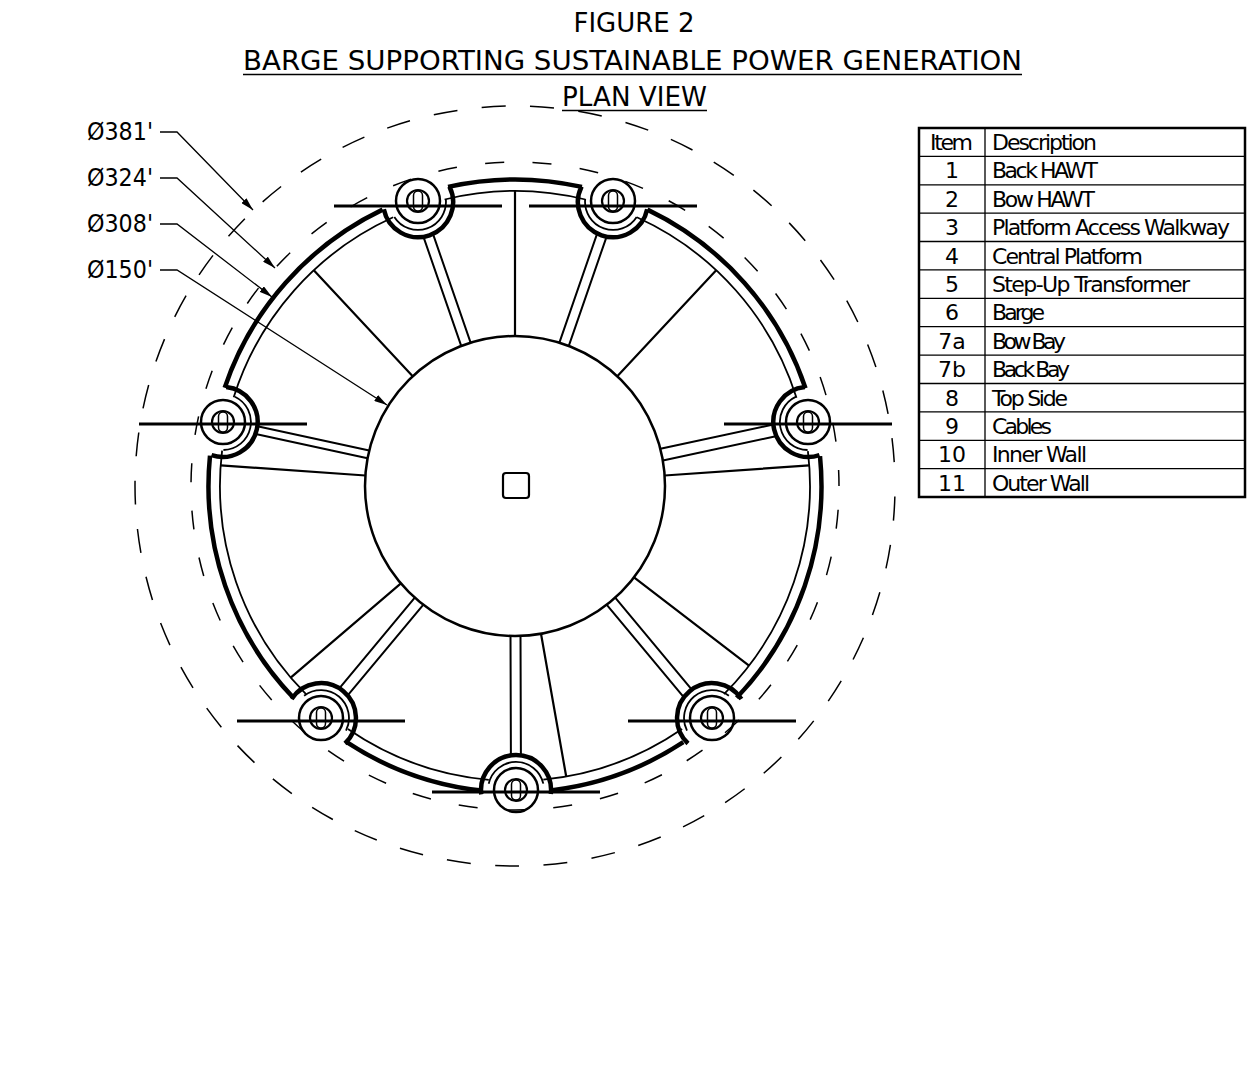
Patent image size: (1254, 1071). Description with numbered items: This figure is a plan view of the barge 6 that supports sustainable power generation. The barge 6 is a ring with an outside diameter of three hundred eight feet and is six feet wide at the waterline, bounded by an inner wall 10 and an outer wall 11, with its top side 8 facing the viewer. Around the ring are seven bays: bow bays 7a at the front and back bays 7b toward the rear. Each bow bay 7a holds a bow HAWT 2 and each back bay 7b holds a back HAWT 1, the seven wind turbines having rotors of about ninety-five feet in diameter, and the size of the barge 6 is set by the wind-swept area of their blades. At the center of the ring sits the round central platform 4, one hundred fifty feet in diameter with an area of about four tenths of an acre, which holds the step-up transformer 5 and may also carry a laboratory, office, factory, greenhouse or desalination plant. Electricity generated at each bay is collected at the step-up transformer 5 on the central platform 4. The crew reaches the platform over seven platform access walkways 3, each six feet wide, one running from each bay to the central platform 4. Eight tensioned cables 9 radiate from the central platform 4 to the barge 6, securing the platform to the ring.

The Back HAWT 1 is at (405, 185).
The Bow HAWT 2 is at (323, 728).
The Platform Access Walkway 3 is at (447, 290).
The Central Platform 4 is at (596, 562).
The Step-up Transformer 5 is at (518, 470).
The Barge 6 is at (815, 560).
The Bow Bay 7a is at (324, 680).
The Back Bay 7b is at (443, 233).
The Top Side 8 is at (493, 485).
The tensioned cable 9 is at (517, 300).
The Inner Wall 10 is at (715, 272).
The Outer Wall 11 is at (714, 249).